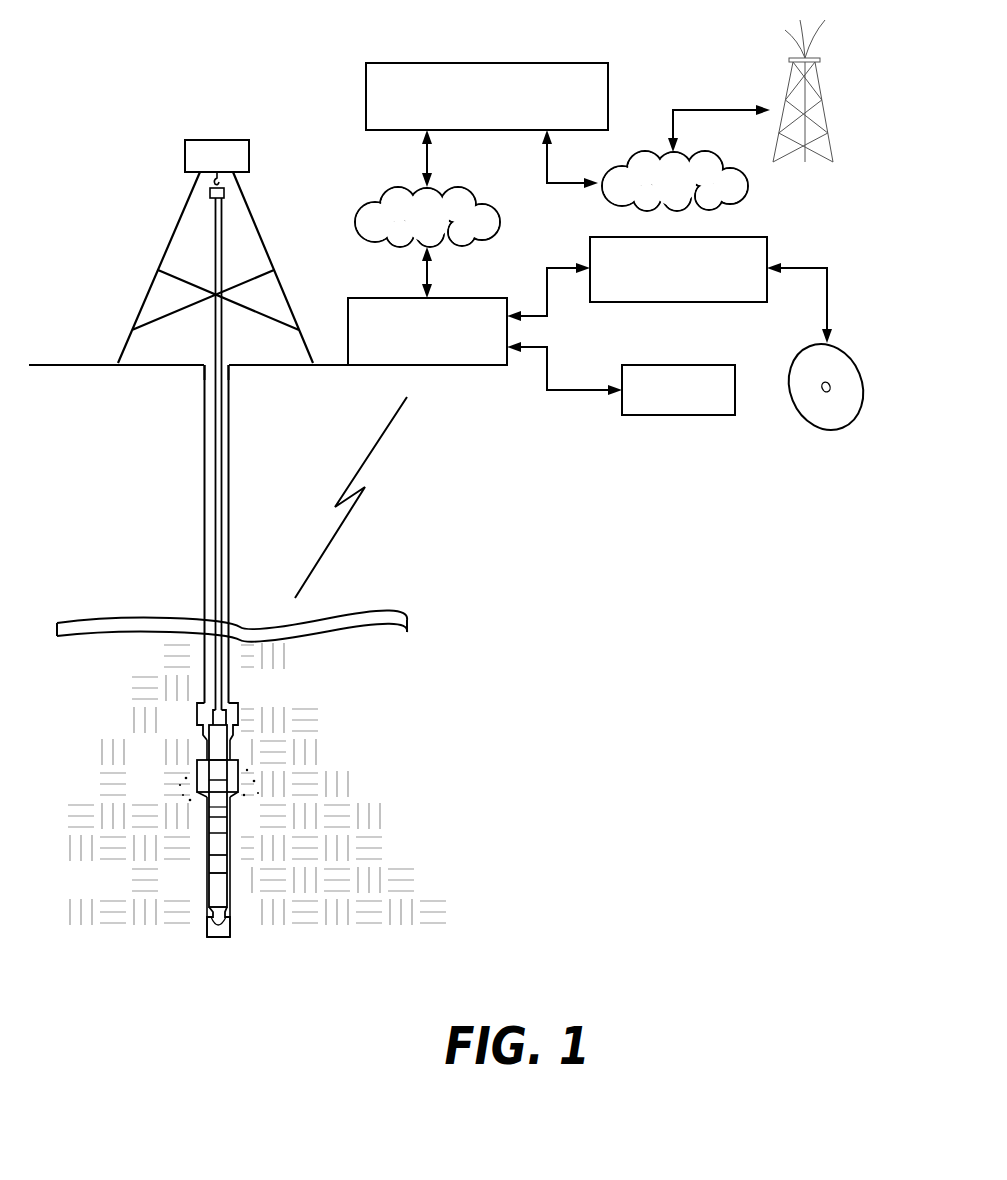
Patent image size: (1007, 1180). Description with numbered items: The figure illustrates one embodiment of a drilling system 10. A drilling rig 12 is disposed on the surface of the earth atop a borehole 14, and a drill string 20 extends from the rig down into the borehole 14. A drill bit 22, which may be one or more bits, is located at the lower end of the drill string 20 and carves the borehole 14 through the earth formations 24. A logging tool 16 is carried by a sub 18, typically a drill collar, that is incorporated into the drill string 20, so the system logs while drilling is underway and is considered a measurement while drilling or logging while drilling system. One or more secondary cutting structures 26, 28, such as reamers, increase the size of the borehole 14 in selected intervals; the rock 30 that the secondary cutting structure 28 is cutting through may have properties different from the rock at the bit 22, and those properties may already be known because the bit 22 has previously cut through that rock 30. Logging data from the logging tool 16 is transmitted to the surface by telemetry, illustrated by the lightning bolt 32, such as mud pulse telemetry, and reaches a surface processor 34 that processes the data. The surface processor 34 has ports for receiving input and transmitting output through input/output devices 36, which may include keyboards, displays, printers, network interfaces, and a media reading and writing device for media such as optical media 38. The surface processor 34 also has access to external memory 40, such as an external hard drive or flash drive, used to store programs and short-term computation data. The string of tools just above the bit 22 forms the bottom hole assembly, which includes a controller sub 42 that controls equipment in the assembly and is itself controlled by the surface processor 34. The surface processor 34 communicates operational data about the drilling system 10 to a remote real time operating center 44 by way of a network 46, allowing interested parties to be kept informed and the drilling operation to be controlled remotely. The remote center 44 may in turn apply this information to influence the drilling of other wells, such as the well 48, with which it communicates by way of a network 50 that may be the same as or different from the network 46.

The drilling system 10 is at (168, 50).
The drilling rig 12 is at (172, 242).
The borehole 14 is at (228, 537).
The logging tool 16 is at (223, 832).
The sub 18 is at (212, 888).
The drill string 20 is at (215, 362).
The drill bit 22 is at (218, 931).
The earth formations 24 is at (287, 933).
The secondary cutting structure 26 is at (209, 541).
The secondary cutting structure 28 is at (221, 808).
The rock 30 is at (250, 783).
The lightning bolt 32 is at (365, 487).
The surface processor 34 is at (466, 298).
The input/output devices 36 is at (720, 237).
The optical media 38 is at (838, 428).
The external memory 40 is at (677, 415).
The controller sub 42 is at (223, 865).
The remote real time operating center 44 is at (488, 63).
The network 46 is at (477, 190).
The well 48 is at (790, 85).
The network 50 is at (718, 152).